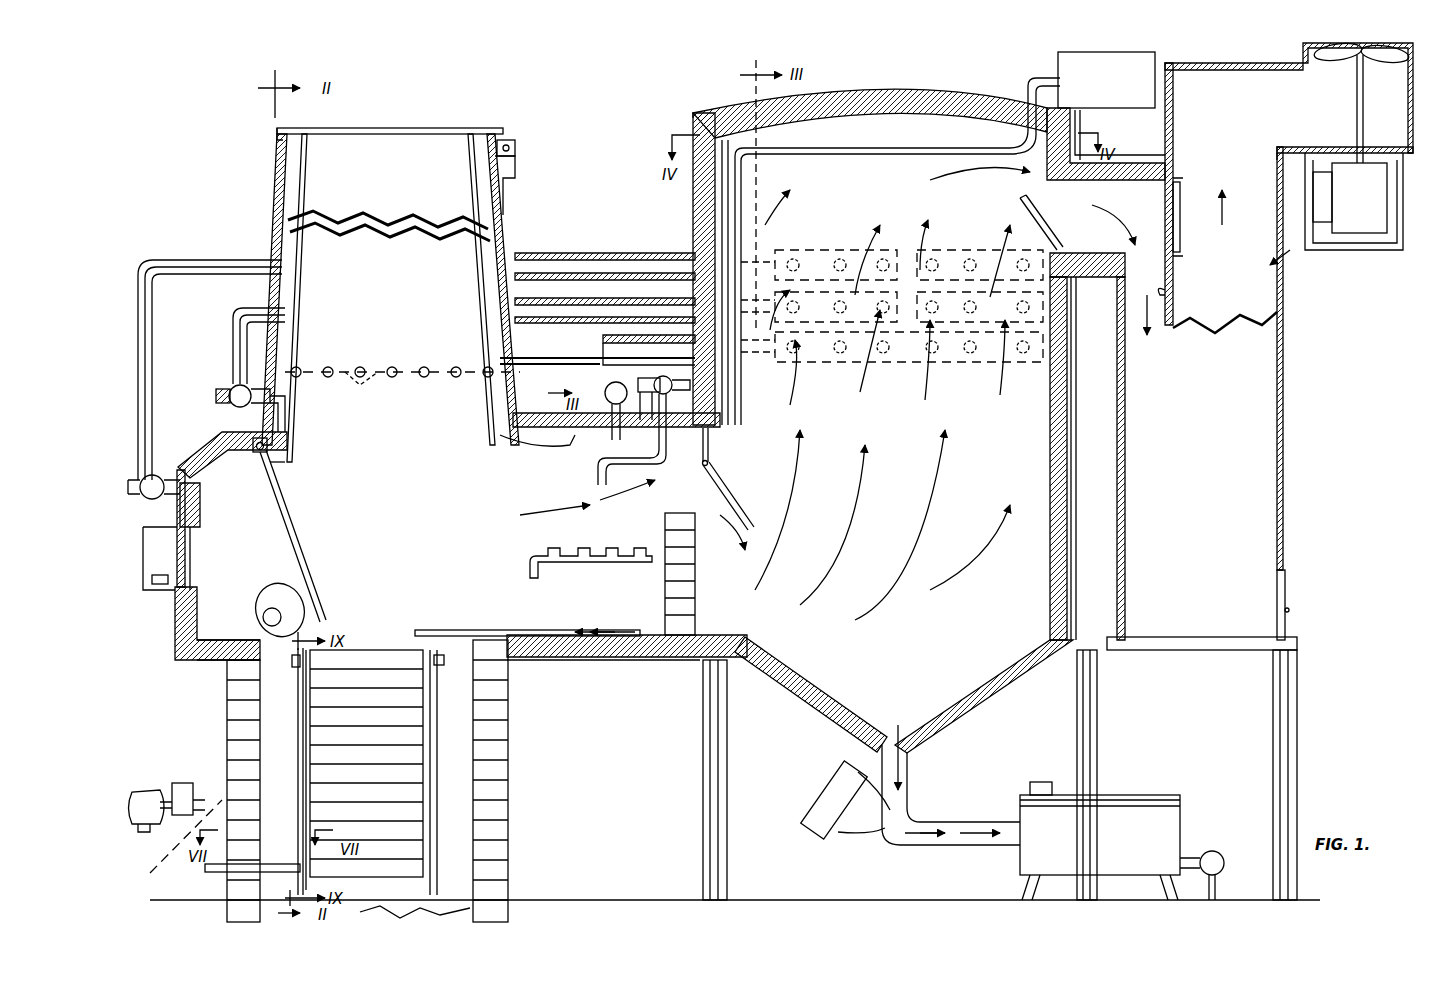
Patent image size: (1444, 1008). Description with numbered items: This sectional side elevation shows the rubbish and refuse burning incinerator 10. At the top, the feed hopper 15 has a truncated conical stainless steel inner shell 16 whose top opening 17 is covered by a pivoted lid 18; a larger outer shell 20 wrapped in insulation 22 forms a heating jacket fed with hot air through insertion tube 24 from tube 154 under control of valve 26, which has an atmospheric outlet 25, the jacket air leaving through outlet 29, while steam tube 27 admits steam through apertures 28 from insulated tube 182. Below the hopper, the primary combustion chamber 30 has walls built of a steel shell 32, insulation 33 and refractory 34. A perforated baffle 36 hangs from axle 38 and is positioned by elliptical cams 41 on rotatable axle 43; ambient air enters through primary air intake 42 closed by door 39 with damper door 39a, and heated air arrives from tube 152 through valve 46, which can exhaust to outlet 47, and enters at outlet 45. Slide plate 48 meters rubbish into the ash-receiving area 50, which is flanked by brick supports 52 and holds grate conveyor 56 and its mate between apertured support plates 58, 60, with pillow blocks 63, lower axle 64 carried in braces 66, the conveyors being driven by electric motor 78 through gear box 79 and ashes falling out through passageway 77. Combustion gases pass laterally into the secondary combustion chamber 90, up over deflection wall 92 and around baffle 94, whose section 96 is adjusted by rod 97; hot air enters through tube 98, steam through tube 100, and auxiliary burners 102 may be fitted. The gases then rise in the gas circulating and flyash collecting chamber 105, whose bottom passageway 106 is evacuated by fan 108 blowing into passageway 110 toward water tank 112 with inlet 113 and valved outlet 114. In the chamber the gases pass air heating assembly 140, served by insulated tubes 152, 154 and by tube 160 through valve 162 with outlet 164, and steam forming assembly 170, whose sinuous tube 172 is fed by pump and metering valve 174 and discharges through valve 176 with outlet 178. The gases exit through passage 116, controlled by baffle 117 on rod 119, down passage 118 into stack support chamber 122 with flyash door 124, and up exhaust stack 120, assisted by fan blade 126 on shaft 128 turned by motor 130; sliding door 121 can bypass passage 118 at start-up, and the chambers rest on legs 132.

The incinerator 10 is at (618, 150).
The feed hopper 15 is at (270, 172).
The inner shell 16 is at (308, 185).
The top opening 17 is at (400, 126).
The lid 18 is at (474, 126).
The heating jacket shell 20 is at (485, 265).
The insulation layer 22 is at (275, 205).
The hot air insertion tube 24 is at (290, 410).
The outlet 25 is at (220, 395).
The valve 26 is at (236, 385).
The steam tube 27 is at (356, 366).
The apertures 28 is at (359, 389).
The outlet 29 is at (512, 170).
The primary combustion chamber 30 is at (403, 524).
The steel plate shell 32 is at (176, 654).
The insulation layer 33 is at (176, 628).
The refractory material 34 is at (228, 640).
The perforated baffle 36 is at (296, 514).
The axle 38 is at (262, 455).
The door 39 is at (178, 528).
The damper door 39a is at (160, 586).
The elliptical cams 41 is at (283, 590).
The primary air intake 42 is at (192, 595).
The rotatable axle 43 is at (270, 605).
The hot air outlet 45 is at (208, 505).
The valve 46 is at (155, 500).
The outlet 47 is at (145, 478).
The slide plate 48 is at (465, 617).
The ash-receiving area 50 is at (262, 742).
The brick support walls 52 is at (228, 690).
The grate conveyor 56 is at (395, 635).
The support plate 58 is at (437, 700).
The support plate 60 is at (300, 712).
The bearing pillow blocks 63 is at (295, 665).
The lower axle 64 is at (210, 872).
The braces 66 is at (308, 735).
The passageway 77 is at (470, 908).
The electric motor 78 is at (143, 785).
The reduction gear box 79 is at (185, 783).
The secondary combustion chamber 90 is at (562, 492).
The flow deflection wall 92 is at (692, 570).
The baffle 94 is at (712, 437).
The baffle section 96 is at (732, 495).
The rotatable rod 97 is at (703, 467).
The hot air tube 98 is at (520, 450).
The steam tube 100 is at (612, 462).
The auxiliary burners 102 is at (595, 560).
The gas circulating and flyash collecting chamber 105 is at (898, 417).
The passageway 106 is at (898, 725).
The fan 108 is at (818, 800).
The passageway 110 is at (990, 838).
The water tank 112 is at (1165, 773).
The inlet 113 is at (1040, 782).
The valved outlet 114 is at (1228, 845).
The passage 116 is at (1133, 204).
The movable baffle 117 is at (1020, 210).
The downward passage 118 is at (1168, 288).
The pivotable rod 119 is at (1060, 253).
The exhaust stack 120 is at (1300, 245).
The door 121 is at (1180, 200).
The exhaust stack support chamber 122 is at (1215, 439).
The door 124 is at (1287, 585).
The fan blade 126 is at (1375, 55).
The shaft 128 is at (1357, 100).
The electric motor 130 is at (1373, 199).
The legs 132 is at (705, 755).
The air heating assembly 140 is at (825, 248).
The insulated exhaust tube 152 is at (150, 342).
The insulated exhaust tube 154 is at (232, 343).
The insulated hot air tube 160 is at (640, 335).
The valve 162 is at (603, 343).
The outlet 164 is at (605, 420).
The steam forming assembly 170 is at (815, 150).
The steam tube 172 is at (890, 152).
The pump and metering valve 174 is at (1057, 62).
The valve 176 is at (668, 405).
The outlet 178 is at (642, 418).
The insulated steam tube 182 is at (552, 358).